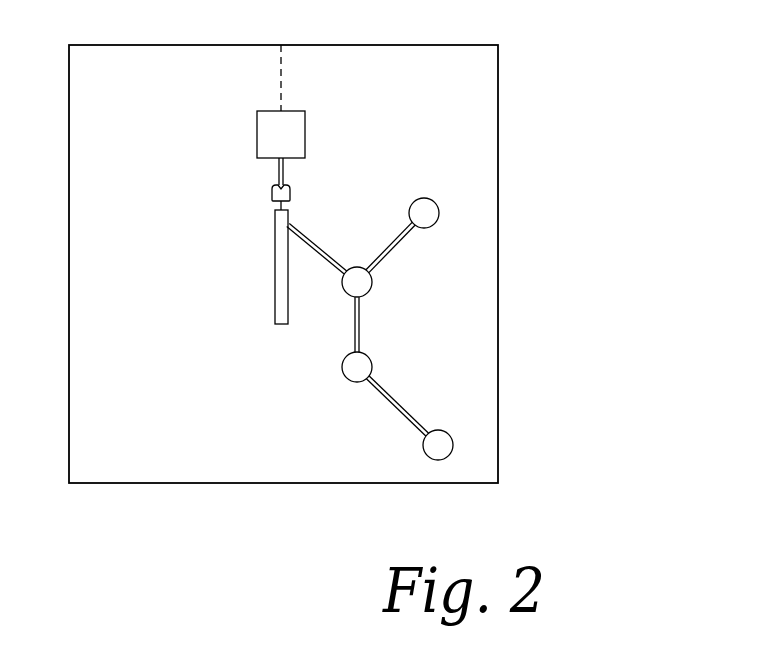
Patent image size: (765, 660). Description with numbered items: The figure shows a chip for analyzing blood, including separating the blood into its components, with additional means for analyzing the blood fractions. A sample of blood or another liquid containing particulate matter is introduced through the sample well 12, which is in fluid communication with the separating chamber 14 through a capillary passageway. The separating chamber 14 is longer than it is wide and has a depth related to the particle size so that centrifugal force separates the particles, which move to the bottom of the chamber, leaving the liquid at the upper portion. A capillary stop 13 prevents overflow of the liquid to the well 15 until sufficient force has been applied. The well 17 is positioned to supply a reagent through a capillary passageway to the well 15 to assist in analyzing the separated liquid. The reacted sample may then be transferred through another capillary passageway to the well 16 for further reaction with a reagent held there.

The sample well 12 is at (269, 144).
The capillary stop 13 is at (314, 244).
The separating chamber 14 is at (275, 262).
The well 15 is at (372, 284).
The well 16 is at (342, 367).
The well 17 is at (426, 198).